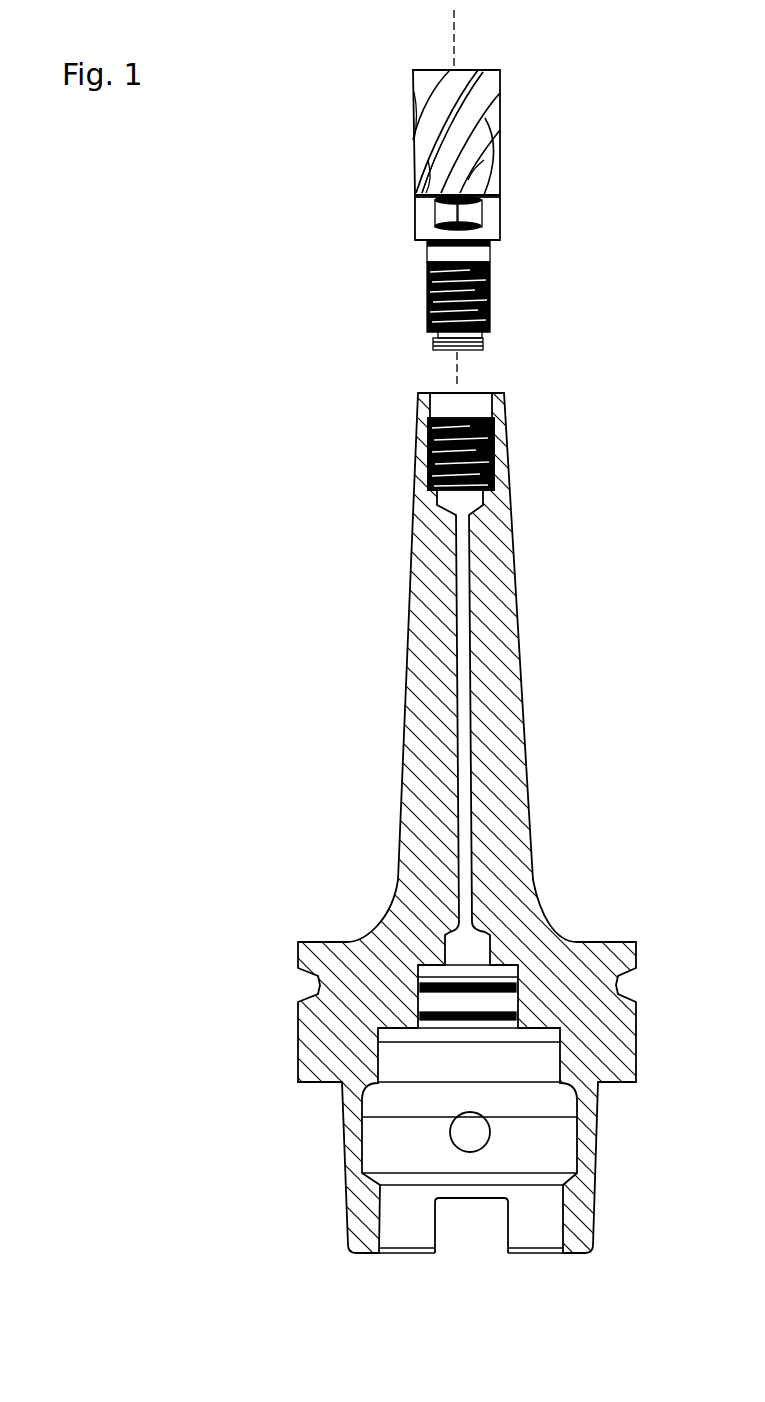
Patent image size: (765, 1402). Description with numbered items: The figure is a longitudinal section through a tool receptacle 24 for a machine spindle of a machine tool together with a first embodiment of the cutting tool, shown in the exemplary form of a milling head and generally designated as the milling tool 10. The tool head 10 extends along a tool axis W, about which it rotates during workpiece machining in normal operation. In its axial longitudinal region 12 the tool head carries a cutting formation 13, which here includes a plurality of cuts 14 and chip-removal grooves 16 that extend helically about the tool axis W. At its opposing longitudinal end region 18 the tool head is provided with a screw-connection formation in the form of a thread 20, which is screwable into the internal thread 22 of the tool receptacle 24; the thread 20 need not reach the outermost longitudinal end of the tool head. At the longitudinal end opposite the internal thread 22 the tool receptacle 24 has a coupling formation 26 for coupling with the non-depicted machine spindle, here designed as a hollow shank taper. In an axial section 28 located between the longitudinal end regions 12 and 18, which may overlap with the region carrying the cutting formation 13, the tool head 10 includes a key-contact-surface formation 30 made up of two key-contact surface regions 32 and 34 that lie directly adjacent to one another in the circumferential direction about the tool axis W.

The milling tool 10 is at (572, 176).
The axial longitudinal region 12 is at (398, 67).
The cutting formation 13 is at (510, 136).
The cuts 14 is at (441, 70).
The chip-removal grooves 16 is at (473, 80).
The longitudinal end region 18 is at (398, 260).
The thread 20 is at (497, 291).
The internal thread 22 is at (493, 453).
The tool receptacle 24 is at (538, 748).
The coupling formation 26 is at (601, 1188).
The axial section 28 is at (513, 202).
The key-contact-surface formation 30 is at (435, 213).
The key-contact surface region 32 is at (443, 222).
The key-contact surface region 34 is at (470, 213).
The tool axis W is at (454, 43).